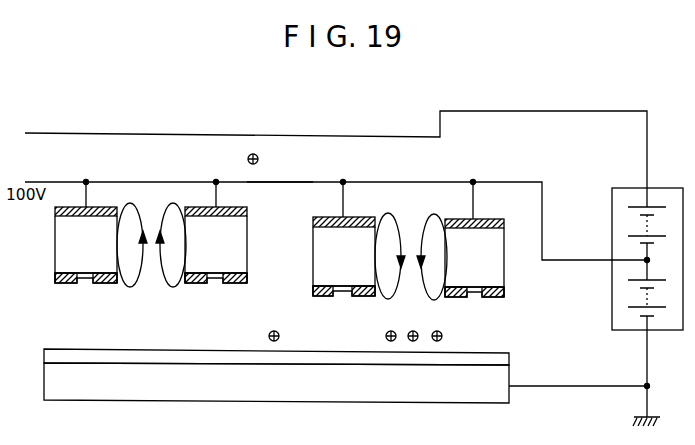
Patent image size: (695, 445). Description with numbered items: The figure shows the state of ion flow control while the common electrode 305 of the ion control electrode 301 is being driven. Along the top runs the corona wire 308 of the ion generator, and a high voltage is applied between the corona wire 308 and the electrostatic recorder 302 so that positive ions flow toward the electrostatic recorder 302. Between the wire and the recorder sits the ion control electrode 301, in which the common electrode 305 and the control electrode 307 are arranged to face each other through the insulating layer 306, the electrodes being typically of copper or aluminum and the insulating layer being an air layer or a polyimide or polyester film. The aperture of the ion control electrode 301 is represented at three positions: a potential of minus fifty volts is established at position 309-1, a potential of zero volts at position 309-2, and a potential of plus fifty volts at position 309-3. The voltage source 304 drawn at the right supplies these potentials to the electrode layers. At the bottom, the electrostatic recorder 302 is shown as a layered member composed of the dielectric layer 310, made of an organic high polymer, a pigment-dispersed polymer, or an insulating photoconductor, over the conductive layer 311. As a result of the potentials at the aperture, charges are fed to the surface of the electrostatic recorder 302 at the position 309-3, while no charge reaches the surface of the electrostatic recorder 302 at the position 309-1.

The ion control electrode 301 is at (503, 251).
The electrostatic recorder 302 is at (345, 379).
The voltage source 304 is at (665, 187).
The common electrode 305 is at (503, 223).
The insulating layer 306 is at (504, 265).
The control electrode 307 is at (504, 292).
The corona wire 308 is at (401, 133).
The aperture position at −50 V 309-1 is at (146, 190).
The aperture position at 0 V 309-2 is at (296, 190).
The aperture position at +50 V 309-3 is at (434, 197).
The dielectric layer 310 is at (510, 357).
The conductive layer 311 is at (510, 397).